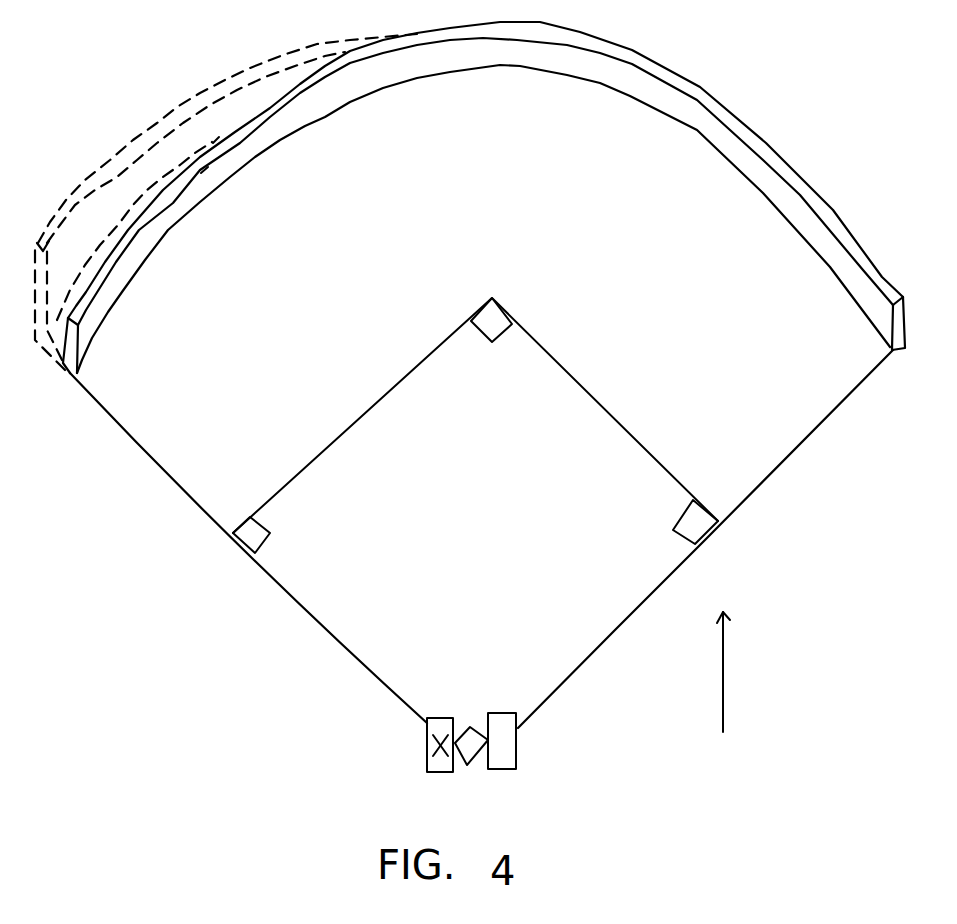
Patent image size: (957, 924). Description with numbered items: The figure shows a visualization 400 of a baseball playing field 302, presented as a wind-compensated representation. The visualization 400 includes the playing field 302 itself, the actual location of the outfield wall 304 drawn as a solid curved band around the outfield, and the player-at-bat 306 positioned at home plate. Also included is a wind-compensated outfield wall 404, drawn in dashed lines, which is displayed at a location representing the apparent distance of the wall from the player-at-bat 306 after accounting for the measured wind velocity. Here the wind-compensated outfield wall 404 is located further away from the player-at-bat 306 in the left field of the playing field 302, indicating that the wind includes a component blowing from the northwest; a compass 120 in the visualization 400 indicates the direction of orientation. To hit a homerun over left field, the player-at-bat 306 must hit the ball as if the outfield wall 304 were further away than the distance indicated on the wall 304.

The playing field 302 is at (475, 383).
The outfield wall 304 is at (484, 197).
The wind-compensated outfield wall 404 is at (226, 202).
The visualization 400 is at (481, 539).
The player-at-bat 306 is at (432, 751).
The compass 120 is at (756, 659).